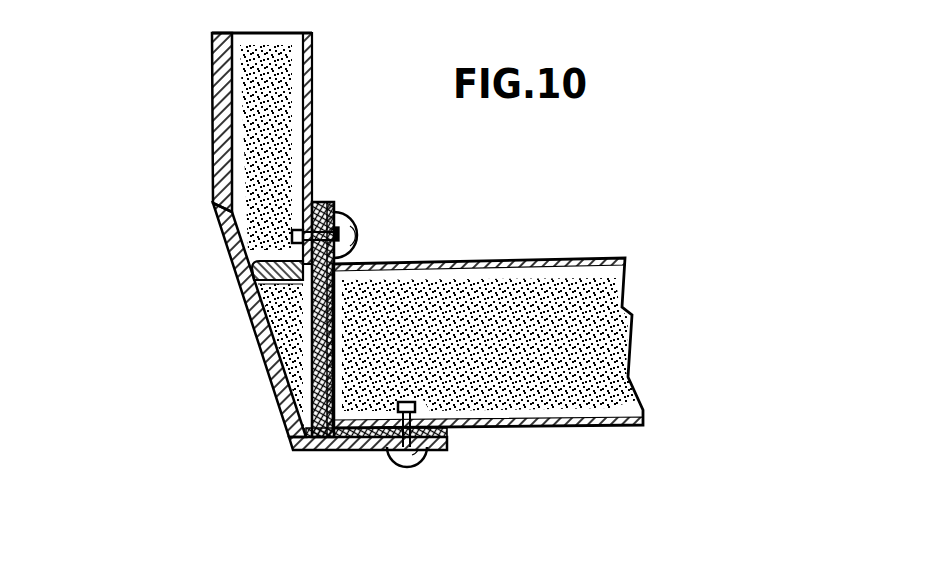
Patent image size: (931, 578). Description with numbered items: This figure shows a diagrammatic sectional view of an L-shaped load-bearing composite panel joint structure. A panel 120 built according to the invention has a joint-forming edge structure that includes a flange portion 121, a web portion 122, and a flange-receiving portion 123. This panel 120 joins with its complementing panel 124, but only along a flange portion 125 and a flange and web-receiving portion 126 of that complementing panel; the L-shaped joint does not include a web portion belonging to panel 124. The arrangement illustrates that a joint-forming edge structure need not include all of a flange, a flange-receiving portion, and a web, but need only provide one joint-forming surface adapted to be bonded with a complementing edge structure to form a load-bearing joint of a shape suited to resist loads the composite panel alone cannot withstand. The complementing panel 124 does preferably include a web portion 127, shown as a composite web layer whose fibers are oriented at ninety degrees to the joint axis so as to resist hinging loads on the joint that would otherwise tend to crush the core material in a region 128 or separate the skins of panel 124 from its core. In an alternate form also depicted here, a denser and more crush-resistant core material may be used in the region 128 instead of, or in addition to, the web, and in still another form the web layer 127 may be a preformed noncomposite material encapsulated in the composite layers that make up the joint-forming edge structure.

The panel 120 is at (526, 243).
The flange portion 121 is at (335, 207).
The web portion 122 is at (334, 337).
The flange-receiving portion 123 is at (450, 425).
The complementing panel 124 is at (177, 235).
The flange portion 125 is at (340, 450).
The flange and web-receiving portion 126 is at (300, 309).
The web portion 127 is at (268, 264).
The core material region 128 is at (265, 360).